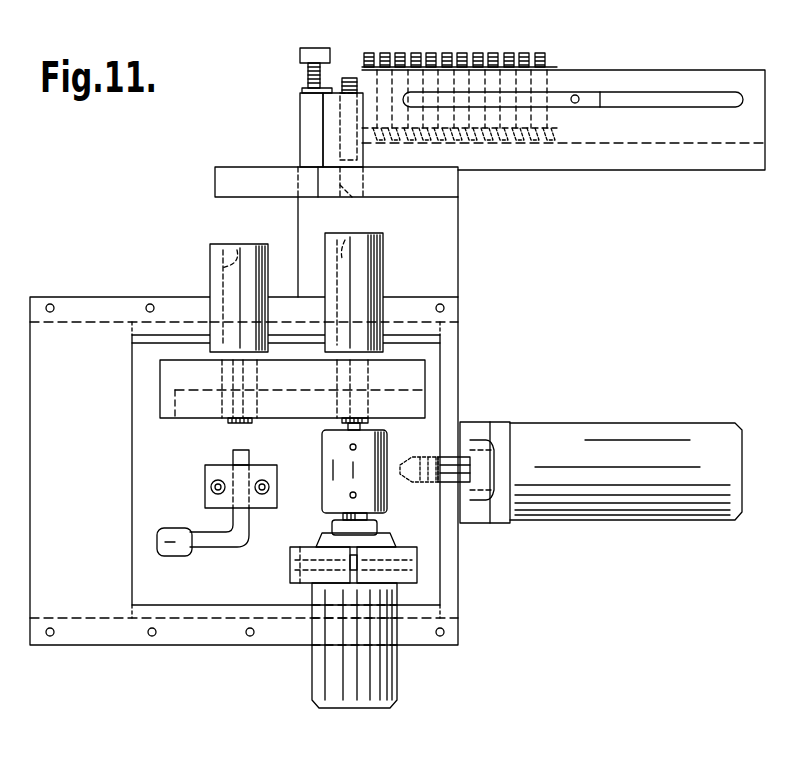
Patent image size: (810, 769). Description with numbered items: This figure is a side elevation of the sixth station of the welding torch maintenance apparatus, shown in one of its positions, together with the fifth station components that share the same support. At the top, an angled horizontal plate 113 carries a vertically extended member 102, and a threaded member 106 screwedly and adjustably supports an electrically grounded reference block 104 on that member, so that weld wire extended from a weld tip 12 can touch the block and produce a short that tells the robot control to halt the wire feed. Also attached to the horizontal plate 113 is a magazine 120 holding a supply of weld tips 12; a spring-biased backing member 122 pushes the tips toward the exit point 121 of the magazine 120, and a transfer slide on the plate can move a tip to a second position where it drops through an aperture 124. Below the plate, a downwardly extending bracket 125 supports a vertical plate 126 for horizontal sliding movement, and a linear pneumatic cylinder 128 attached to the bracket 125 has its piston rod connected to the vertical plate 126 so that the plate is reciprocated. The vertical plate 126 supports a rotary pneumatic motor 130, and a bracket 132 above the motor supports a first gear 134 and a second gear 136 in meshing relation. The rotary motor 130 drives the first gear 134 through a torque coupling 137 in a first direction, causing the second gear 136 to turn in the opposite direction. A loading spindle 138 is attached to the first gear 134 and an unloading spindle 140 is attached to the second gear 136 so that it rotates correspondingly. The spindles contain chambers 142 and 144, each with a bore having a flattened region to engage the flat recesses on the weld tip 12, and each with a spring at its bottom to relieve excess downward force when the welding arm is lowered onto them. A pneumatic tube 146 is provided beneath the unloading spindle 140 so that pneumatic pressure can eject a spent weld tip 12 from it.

The weld tip 12 is at (505, 53).
The vertically extended member 102 is at (300, 128).
The reference block 104 is at (300, 57).
The threaded member 106 is at (308, 78).
The horizontal plate 113 is at (215, 176).
The magazine 120 is at (700, 70).
The exit point 121 is at (362, 80).
The backing member 122 is at (590, 98).
The aperture 124 is at (355, 200).
The downwardly extending bracket 125 is at (458, 270).
The vertical plate 126 is at (435, 385).
The linear pneumatic cylinder 128 is at (600, 432).
The rotary pneumatic motor 130 is at (322, 672).
The bracket 132 is at (420, 367).
The first gear 134 is at (425, 390).
The second gear 136 is at (165, 395).
The torque coupling 137 is at (325, 455).
The loading spindle 138 is at (355, 262).
The unloading spindle 140 is at (230, 285).
The chamber 142 is at (352, 238).
The chamber 144 is at (237, 247).
The pneumatic tube 146 is at (232, 548).